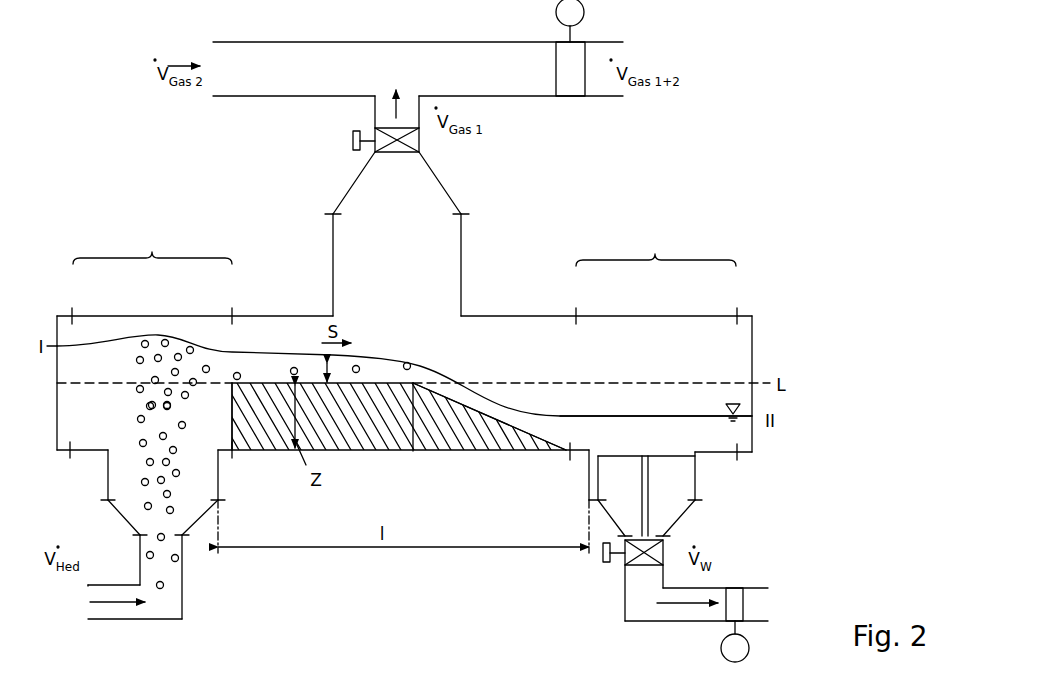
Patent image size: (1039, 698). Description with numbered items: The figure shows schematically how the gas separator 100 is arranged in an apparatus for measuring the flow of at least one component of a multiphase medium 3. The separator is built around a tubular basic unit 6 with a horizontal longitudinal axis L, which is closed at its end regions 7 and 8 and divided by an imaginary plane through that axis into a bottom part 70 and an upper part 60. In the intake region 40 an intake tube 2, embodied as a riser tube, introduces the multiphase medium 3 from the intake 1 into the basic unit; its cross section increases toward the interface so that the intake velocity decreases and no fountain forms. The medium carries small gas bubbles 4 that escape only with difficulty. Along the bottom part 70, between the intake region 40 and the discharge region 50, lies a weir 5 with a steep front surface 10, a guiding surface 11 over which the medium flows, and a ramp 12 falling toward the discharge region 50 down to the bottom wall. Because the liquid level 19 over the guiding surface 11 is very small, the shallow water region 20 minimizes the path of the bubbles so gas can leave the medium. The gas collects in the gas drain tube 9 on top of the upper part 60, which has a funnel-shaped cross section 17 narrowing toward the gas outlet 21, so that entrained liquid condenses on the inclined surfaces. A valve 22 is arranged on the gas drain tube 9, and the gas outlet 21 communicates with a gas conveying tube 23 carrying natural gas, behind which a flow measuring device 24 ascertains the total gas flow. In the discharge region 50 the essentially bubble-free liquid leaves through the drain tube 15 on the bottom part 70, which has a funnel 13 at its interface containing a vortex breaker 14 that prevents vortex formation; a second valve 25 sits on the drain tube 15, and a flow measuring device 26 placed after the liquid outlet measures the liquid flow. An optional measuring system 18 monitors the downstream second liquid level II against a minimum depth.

The intake 1 is at (88, 611).
The intake tube 2 is at (183, 567).
The multiphase medium 3 is at (176, 609).
The small gas bubbles 4 is at (174, 511).
The weir 5 is at (365, 437).
The tubular basic unit 6 is at (99, 316).
The end region 7 is at (57, 410).
The end region 8 is at (752, 368).
The gas drain tube 9 is at (462, 247).
The front surface 10 is at (240, 437).
The guiding surface 11 is at (413, 451).
The ramp 12 is at (505, 425).
The funnel 13 is at (700, 488).
The vortex breaker 14 is at (614, 486).
The drain tube 15 is at (665, 622).
The funnel-shaped cross section 17 is at (445, 187).
The measuring system 18 is at (752, 410).
The liquid level 19 is at (325, 363).
The shallow water region 20 is at (272, 362).
The gas outlet 21 is at (412, 98).
The valve 22 is at (405, 140).
The gas conveying tube 23 is at (283, 50).
The flow measuring device 24 is at (570, 98).
The valve 25 is at (641, 563).
The flow measuring device 26 is at (740, 595).
The intake region 40 is at (152, 248).
The discharge region 50 is at (656, 249).
The upper part 60 is at (752, 337).
The bottom part 70 is at (752, 446).
The gas separator 100 is at (266, 253).